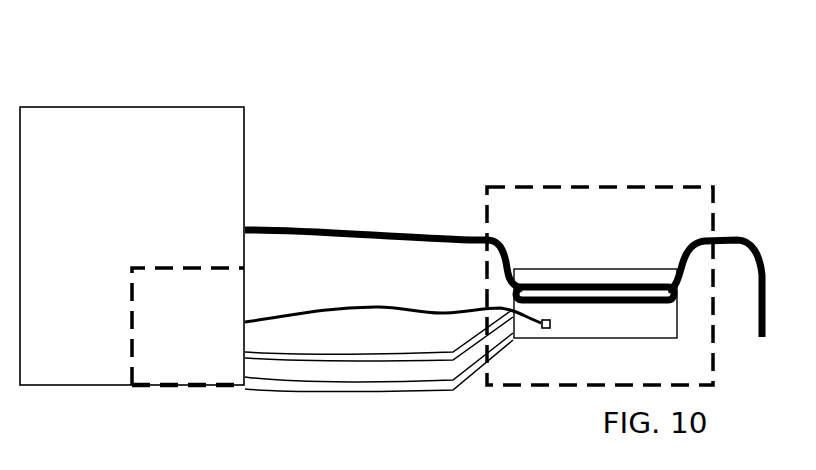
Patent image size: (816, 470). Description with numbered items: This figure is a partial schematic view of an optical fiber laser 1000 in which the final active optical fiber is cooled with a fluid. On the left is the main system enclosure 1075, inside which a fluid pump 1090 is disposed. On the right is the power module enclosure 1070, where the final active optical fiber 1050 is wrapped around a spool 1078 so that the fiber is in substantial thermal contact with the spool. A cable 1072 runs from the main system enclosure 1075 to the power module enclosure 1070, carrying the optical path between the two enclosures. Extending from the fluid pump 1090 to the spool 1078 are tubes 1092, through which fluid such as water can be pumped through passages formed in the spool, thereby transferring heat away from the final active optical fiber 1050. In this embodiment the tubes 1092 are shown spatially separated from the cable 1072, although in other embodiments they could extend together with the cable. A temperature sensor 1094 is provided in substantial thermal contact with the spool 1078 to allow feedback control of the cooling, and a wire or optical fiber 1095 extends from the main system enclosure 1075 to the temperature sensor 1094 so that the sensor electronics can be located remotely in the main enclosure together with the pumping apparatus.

The optical fiber laser 1000 is at (465, 89).
The main system enclosure 1075 is at (140, 106).
The fluid pump 1090 is at (150, 268).
The cable 1072 is at (340, 229).
The wire or optical fiber 1095 is at (332, 309).
The tubes 1092 is at (298, 359).
The power module enclosure 1070 is at (638, 186).
The spool 1078 is at (558, 275).
The final active optical fiber 1050 is at (642, 280).
The temperature sensor 1094 is at (549, 328).